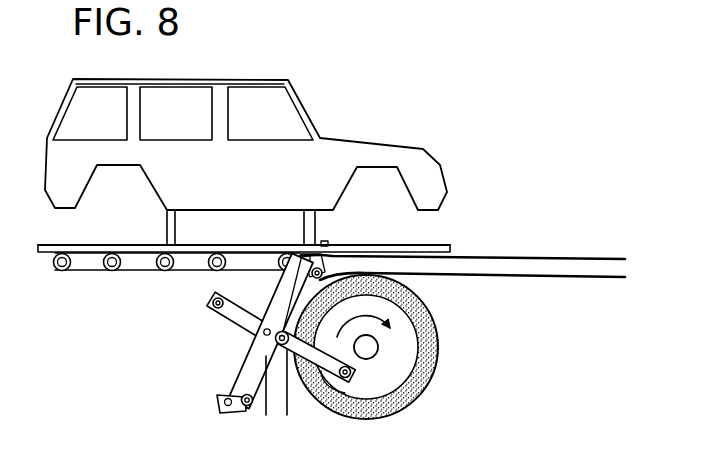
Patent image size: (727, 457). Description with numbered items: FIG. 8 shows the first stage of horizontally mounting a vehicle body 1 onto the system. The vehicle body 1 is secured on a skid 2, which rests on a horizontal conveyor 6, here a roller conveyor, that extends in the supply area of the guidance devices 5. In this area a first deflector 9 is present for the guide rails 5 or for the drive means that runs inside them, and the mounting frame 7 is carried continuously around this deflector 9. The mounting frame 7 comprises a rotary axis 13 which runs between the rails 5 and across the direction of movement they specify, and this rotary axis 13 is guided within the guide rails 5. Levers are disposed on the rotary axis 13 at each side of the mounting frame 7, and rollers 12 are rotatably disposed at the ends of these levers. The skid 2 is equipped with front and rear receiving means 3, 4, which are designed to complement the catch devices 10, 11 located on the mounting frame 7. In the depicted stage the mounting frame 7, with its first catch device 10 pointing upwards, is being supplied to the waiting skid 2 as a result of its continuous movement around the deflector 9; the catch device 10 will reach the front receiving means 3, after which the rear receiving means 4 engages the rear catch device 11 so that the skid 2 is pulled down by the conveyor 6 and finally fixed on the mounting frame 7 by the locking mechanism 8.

The vehicle body 1 is at (225, 111).
The skid 2 is at (245, 246).
The front receiving means 3 is at (327, 243).
The rear receiving means 4 is at (166, 244).
The guide rails 5 is at (568, 277).
The horizontal conveyor 6 is at (63, 271).
The mounting frame 7 is at (297, 298).
The locking mechanism 8 is at (262, 333).
The first deflector 9 is at (438, 366).
The catch device 10 is at (306, 232).
The rear catch device 11 is at (222, 402).
The rollers 12 is at (330, 405).
The rotary axis 13 is at (276, 342).